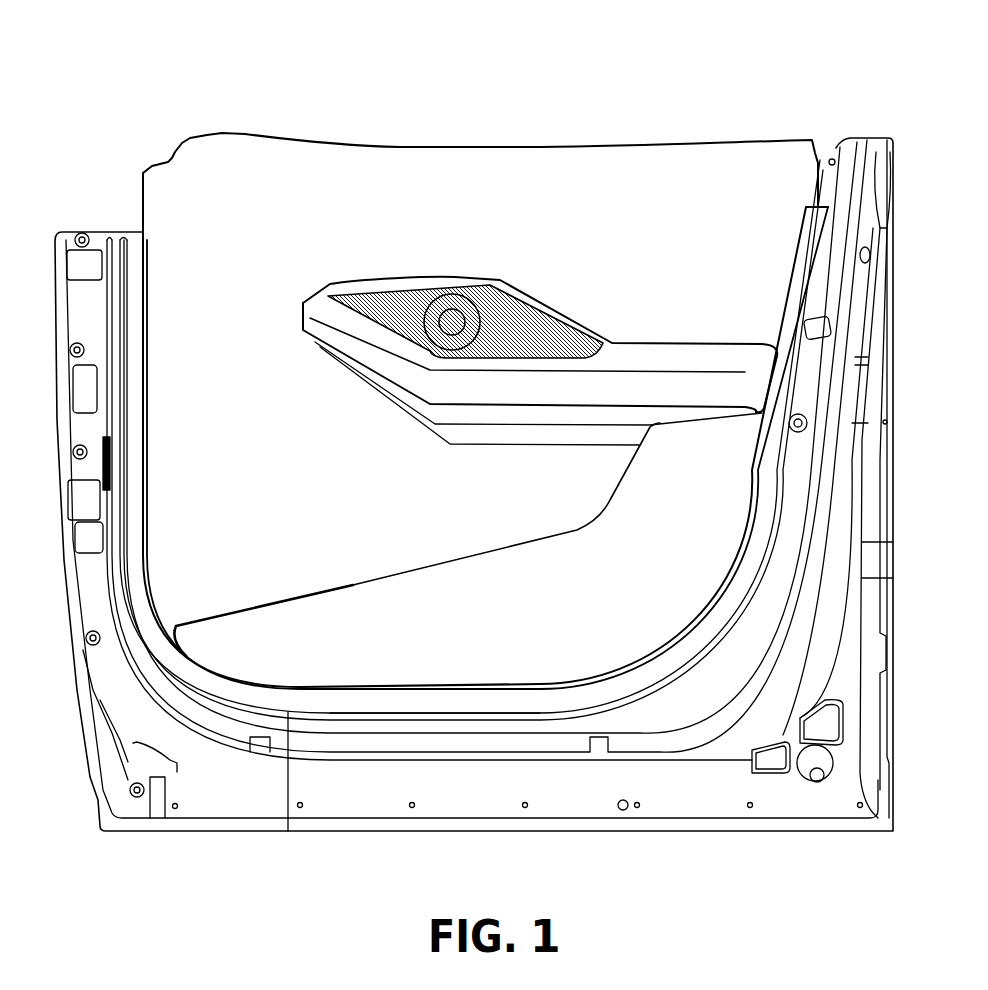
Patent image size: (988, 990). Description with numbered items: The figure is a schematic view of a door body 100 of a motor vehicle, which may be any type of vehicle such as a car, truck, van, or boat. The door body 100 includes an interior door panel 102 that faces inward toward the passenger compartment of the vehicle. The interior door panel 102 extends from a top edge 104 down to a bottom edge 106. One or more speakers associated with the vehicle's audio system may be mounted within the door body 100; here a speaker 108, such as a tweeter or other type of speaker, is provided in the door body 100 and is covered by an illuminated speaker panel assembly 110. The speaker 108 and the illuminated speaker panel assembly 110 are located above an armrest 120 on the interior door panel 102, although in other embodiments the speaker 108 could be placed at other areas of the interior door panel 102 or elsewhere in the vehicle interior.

The door body 100 is at (100, 80).
The interior door panel 102 is at (522, 650).
The top edge 104 is at (537, 147).
The bottom edge 106 is at (380, 703).
The speaker 108 is at (465, 325).
The illuminated speaker panel assembly 110 is at (523, 300).
The armrest 120 is at (718, 397).